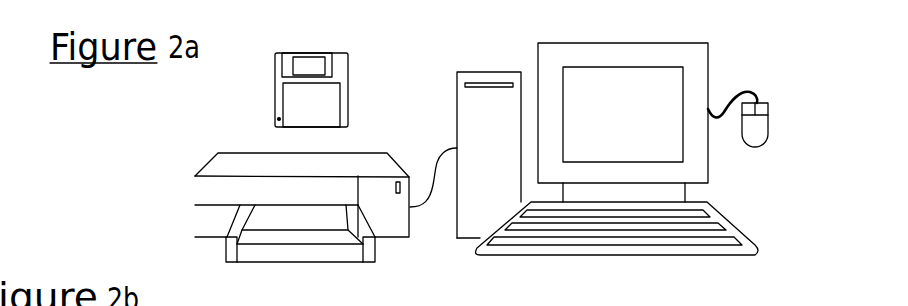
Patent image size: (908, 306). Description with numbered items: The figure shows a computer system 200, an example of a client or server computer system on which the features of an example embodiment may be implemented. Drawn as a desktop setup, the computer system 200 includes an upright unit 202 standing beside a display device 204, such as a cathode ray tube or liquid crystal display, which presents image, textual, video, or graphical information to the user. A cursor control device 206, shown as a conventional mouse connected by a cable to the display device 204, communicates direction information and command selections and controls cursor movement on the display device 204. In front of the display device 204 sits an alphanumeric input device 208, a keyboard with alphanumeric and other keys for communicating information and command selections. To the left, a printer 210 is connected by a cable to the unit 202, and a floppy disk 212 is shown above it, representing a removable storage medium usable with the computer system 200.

The computer system 200 is at (717, 31).
The computer (CPU tower) 202 is at (489, 72).
The display device 204 is at (709, 77).
The cursor control device 206 is at (768, 125).
The alphanumeric input device 208 is at (752, 240).
The printer 210 is at (195, 175).
The floppy disk / storage medium 212 is at (272, 104).